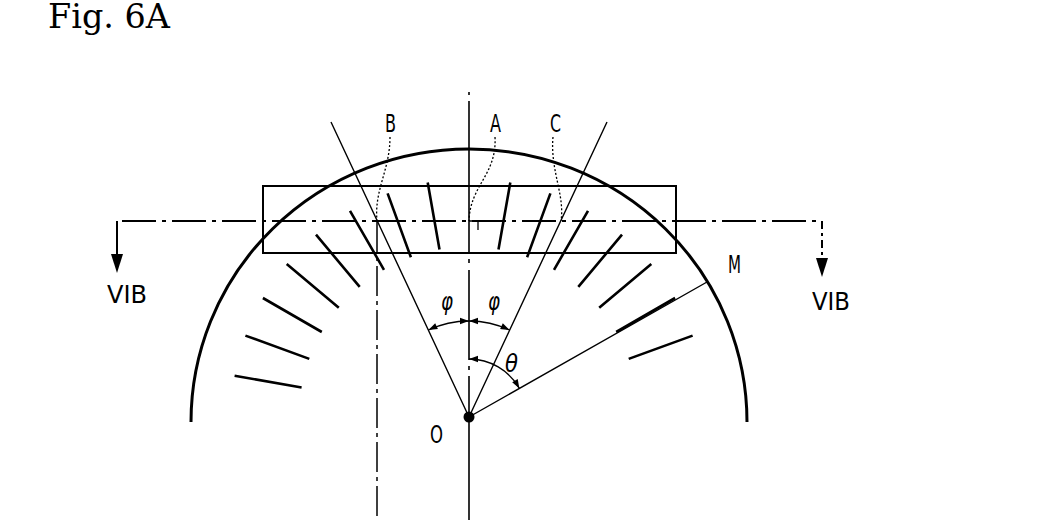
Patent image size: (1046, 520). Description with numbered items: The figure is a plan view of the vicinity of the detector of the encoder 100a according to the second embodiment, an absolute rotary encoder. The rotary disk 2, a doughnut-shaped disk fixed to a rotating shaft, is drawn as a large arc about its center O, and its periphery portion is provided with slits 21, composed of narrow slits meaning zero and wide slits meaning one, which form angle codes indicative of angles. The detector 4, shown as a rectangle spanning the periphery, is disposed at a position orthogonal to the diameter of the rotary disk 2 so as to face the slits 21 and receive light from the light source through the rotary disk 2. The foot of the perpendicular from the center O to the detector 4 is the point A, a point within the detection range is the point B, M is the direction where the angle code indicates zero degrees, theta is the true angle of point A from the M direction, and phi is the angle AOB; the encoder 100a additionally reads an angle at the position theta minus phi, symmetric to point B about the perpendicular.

The encoder 100a is at (717, 127).
The rotary disk 2 is at (745, 383).
The detector 4 is at (676, 197).
The slits 21 is at (242, 382).